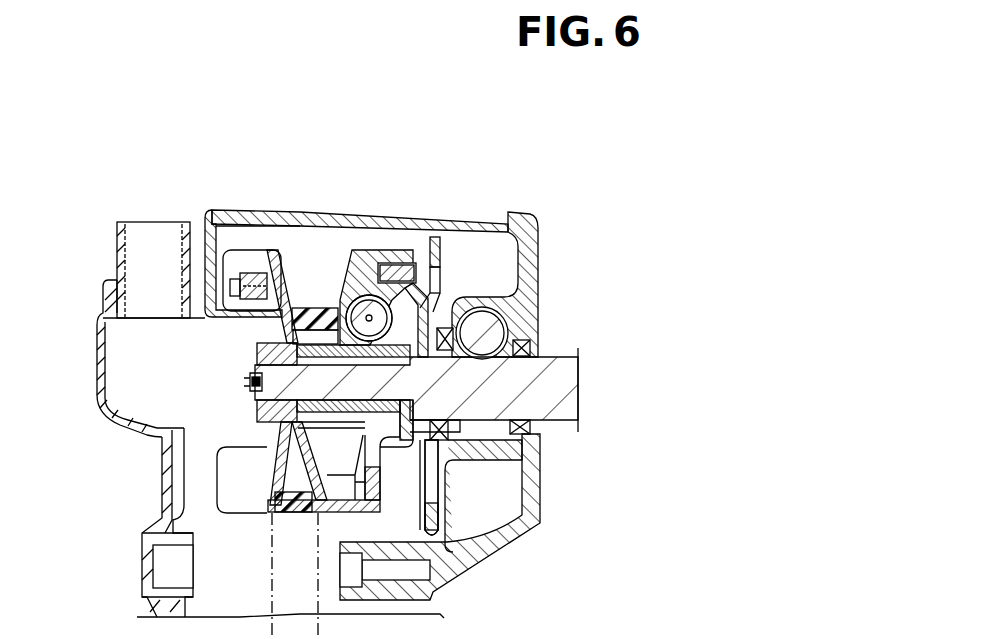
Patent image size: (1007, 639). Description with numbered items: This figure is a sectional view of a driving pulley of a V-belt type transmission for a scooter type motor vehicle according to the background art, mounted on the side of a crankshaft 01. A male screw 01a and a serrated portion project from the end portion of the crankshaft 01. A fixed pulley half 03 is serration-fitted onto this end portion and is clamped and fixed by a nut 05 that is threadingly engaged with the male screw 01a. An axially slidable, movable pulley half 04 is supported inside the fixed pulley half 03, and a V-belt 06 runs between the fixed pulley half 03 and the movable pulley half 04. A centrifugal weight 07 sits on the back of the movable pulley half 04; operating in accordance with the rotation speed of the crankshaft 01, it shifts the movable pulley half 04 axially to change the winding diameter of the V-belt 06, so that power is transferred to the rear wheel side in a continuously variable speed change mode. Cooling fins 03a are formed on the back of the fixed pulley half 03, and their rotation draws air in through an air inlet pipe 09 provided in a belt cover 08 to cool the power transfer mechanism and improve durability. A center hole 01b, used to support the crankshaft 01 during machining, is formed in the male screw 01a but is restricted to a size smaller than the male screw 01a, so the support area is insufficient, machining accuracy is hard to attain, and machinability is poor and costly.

The crankshaft 01 is at (545, 378).
The male screw 01a is at (257, 357).
The center hole 01b is at (250, 387).
The fixed pulley half 03 is at (282, 287).
The cooling fins 03a is at (232, 505).
The movable pulley half 04 is at (340, 262).
The nut 05 is at (257, 413).
The V-belt 06 is at (310, 306).
The centrifugal weight 07 is at (380, 252).
The belt cover 08 is at (160, 459).
The air inlet pipe 09 is at (114, 247).